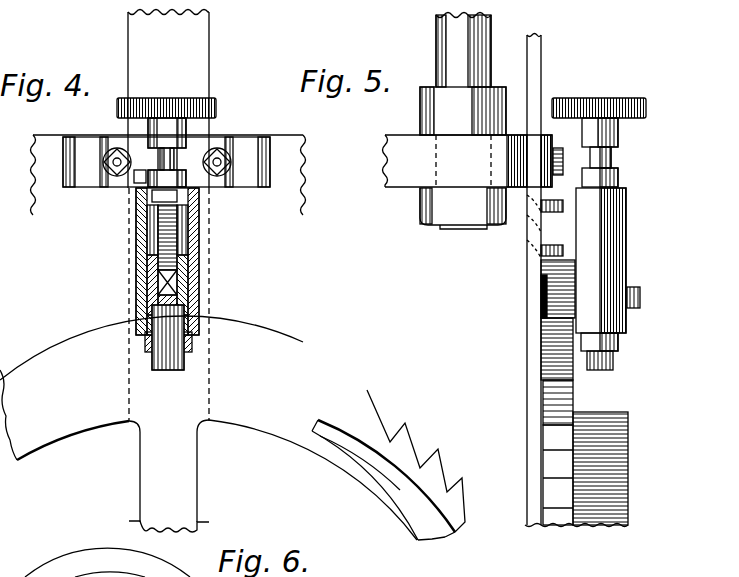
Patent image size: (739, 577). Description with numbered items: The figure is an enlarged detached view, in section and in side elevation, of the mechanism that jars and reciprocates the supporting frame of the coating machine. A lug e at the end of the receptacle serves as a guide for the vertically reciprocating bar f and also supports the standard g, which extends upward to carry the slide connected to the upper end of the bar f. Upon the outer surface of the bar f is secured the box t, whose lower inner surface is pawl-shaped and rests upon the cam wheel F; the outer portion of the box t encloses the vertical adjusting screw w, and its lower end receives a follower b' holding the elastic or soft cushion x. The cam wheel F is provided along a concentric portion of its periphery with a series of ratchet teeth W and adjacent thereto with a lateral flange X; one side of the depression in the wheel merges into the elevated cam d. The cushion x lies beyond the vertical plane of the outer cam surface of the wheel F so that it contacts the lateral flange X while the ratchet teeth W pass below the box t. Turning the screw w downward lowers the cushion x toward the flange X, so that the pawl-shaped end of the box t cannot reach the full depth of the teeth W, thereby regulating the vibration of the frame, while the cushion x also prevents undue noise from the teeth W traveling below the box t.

In FIG. 4, the vertically reciprocating bar f is at (168, 216).
In FIG. 5, the vertically reciprocating bar f is at (542, 57).
In FIG. 4, the vertical adjusting screw w is at (219, 106).
In FIG. 5, the vertical adjusting screw w is at (600, 98).
In FIG. 4, the lug e is at (168, 165).
In FIG. 5, the lug e is at (473, 161).
In FIG. 5, the standard g is at (436, 52).
In FIG. 4, the box t is at (196, 280).
In FIG. 5, the box t is at (540, 286).
In FIG. 4, the follower b' is at (184, 343).
In FIG. 5, the follower b' is at (617, 340).
In FIG. 4, the cushion x is at (168, 371).
In FIG. 5, the cushion x is at (619, 363).
In FIG. 4, the elevated cam d is at (263, 336).
In FIG. 5, the elevated cam d is at (540, 370).
In FIG. 4, the cam wheel F is at (316, 450).
In FIG. 5, the cam wheel F is at (540, 398).
In FIG. 4, the ratchet teeth W is at (415, 444).
In FIG. 5, the ratchet teeth W is at (550, 463).
In FIG. 4, the lateral flange X is at (393, 478).
In FIG. 5, the lateral flange X is at (600, 460).